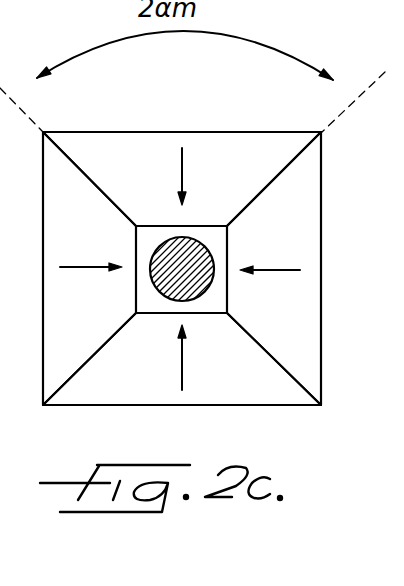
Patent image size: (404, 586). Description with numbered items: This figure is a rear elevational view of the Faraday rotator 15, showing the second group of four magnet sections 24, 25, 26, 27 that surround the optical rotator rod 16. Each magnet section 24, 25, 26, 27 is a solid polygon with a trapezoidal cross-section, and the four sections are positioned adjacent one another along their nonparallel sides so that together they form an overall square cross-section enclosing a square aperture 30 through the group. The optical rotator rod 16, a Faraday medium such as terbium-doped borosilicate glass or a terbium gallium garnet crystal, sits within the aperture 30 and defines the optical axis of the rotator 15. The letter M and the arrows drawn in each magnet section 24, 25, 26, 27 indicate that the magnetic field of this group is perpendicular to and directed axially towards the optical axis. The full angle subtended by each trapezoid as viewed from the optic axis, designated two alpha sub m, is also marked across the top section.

The Faraday rotator 15 is at (180, 115).
The optical rotator rod 16 is at (158, 283).
The magnet section 24 is at (158, 175).
The magnet section 25 is at (305, 218).
The magnet section 26 is at (146, 387).
The magnet section 27 is at (96, 218).
The aperture 30 is at (225, 298).